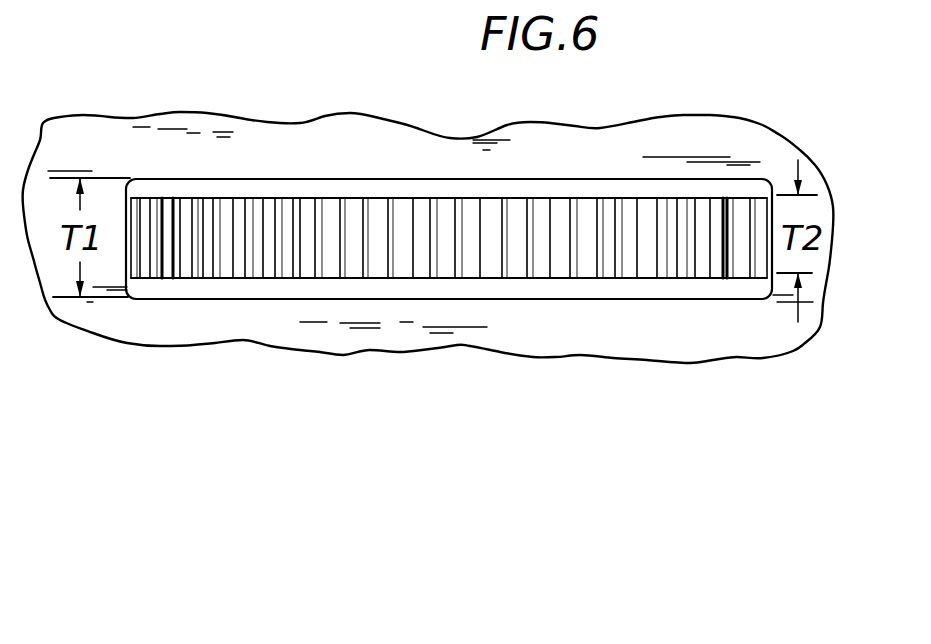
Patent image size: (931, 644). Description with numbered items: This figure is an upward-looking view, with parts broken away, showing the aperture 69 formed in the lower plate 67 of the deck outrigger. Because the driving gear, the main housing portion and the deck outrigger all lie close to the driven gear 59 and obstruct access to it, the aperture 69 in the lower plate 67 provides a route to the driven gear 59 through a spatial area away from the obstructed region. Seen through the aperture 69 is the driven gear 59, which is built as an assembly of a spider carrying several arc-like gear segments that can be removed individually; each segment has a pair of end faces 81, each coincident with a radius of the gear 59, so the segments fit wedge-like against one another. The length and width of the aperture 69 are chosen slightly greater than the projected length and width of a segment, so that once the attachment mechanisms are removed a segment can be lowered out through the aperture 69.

The lower plate 67 is at (257, 117).
The aperture 69 is at (317, 178).
The driven gear 59 is at (362, 272).
The end faces 81 is at (180, 270).